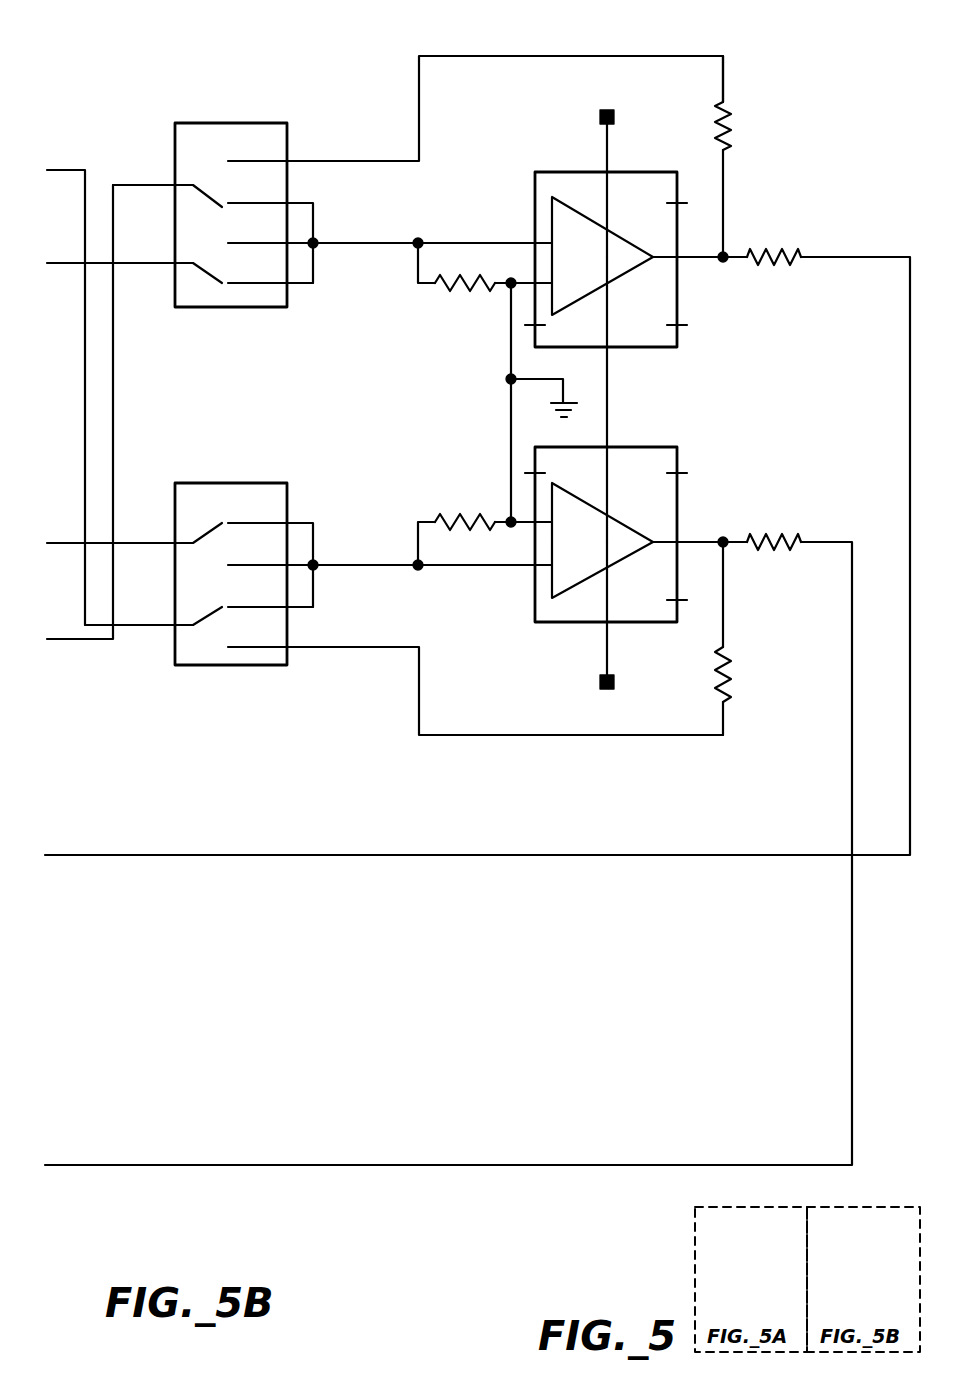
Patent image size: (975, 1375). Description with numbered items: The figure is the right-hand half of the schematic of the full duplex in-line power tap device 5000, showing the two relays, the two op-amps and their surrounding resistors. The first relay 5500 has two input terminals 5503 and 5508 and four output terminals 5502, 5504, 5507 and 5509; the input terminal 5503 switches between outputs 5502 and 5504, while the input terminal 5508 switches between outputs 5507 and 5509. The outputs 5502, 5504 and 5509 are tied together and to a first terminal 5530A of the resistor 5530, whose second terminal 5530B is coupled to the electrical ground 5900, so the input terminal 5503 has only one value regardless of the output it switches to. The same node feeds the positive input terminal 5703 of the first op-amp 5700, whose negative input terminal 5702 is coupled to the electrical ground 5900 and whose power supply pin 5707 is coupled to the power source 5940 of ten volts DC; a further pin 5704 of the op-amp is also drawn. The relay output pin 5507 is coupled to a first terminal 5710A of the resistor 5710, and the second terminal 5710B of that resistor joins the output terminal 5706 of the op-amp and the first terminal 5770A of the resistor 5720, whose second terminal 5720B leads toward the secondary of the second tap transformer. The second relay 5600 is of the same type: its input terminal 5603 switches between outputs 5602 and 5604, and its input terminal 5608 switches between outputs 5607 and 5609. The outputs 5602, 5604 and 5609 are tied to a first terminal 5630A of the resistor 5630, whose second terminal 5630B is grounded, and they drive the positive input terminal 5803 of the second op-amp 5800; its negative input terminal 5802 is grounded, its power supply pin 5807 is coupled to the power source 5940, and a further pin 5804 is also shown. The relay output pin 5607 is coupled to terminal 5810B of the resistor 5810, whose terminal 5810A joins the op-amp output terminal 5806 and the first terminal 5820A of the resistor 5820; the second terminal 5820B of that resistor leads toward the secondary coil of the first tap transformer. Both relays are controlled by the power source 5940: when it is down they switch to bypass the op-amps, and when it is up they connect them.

The full duplex in-line power tap device 5000 is at (200, 46).
The first relay 5500 is at (233, 123).
The input terminal 5508 is at (145, 185).
The input terminal 5503 is at (145, 263).
The output pin 5507 is at (298, 161).
The output terminal 5509 is at (297, 203).
The output terminal 5504 is at (297, 243).
The output pin 5502 is at (297, 283).
The resistor 5530 is at (462, 292).
The first terminal of the resistor 5530A is at (428, 288).
The second terminal of the resistor 5530B is at (497, 290).
The positive input terminal VIN+ 5703 is at (505, 240).
The negative input terminal VIN− 5702 is at (518, 280).
The first op-amp 5700 is at (578, 172).
The power supply pin 5707 is at (607, 140).
The op amp pin 4 line 5704 is at (610, 355).
The power source 5940 is at (612, 110).
The first terminal of the resistor 5710A is at (727, 78).
The resistor 5710 is at (731, 108).
The second terminal of the resistor 5710B is at (727, 168).
The output terminal VO 5706 is at (703, 262).
The resistor first lead 5770A is at (738, 252).
The resistor 5720 is at (778, 248).
The second terminal of the resistor 5720B is at (810, 253).
The electrical ground 5900 is at (550, 413).
The second op-amp 5800 is at (672, 447).
The op amp pin 4 line 5804 is at (610, 437).
The power supply pin 5807 is at (604, 680).
The input terminal VIN− 5802 is at (522, 527).
The positive input terminal VIN+ 5803 is at (522, 570).
The output terminal VO 5806 is at (708, 540).
The first terminal of a resistor 5820A is at (738, 540).
The resistor 5820 is at (775, 535).
The second terminal of the resistor 5820B is at (810, 540).
The second terminal of the resistor 5810A is at (727, 612).
The resistor 5810 is at (731, 660).
The first terminal of a resistor 5810B is at (727, 715).
The second relay 5600 is at (233, 483).
The input terminal 5603 is at (145, 543).
The input pin 5608 is at (145, 625).
The output terminal 5602 is at (298, 523).
The output terminal 5604 is at (298, 565).
The output terminal 5609 is at (298, 607).
The output pin 5607 is at (298, 647).
The resistor 5630 is at (476, 514).
The first terminal of the resistor 5630A is at (428, 518).
The second terminal of the resistor 5630B is at (498, 518).